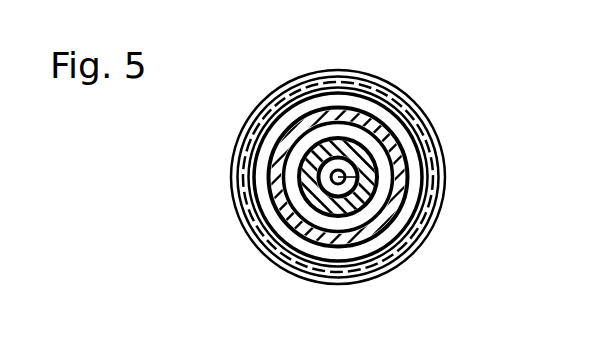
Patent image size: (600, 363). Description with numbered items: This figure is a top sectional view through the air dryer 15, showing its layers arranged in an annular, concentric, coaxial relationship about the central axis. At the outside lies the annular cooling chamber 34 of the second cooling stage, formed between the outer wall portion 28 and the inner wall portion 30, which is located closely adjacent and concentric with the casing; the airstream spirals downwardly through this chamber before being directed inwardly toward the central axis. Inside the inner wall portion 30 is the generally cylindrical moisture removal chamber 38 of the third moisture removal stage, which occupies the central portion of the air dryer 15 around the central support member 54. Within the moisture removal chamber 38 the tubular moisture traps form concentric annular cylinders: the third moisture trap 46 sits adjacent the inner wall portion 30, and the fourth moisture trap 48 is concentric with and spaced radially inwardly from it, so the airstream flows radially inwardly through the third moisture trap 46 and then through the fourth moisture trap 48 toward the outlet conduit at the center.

The air dryer 15 is at (440, 119).
The outer wall portion 28 is at (407, 95).
The inner wall portion 30 is at (354, 70).
The annular cooling chamber 34 is at (432, 170).
The moisture removal chamber 38 is at (306, 240).
The third moisture trap 46 is at (306, 150).
The fourth moisture trap 48 is at (272, 188).
The central support member 54 is at (409, 262).